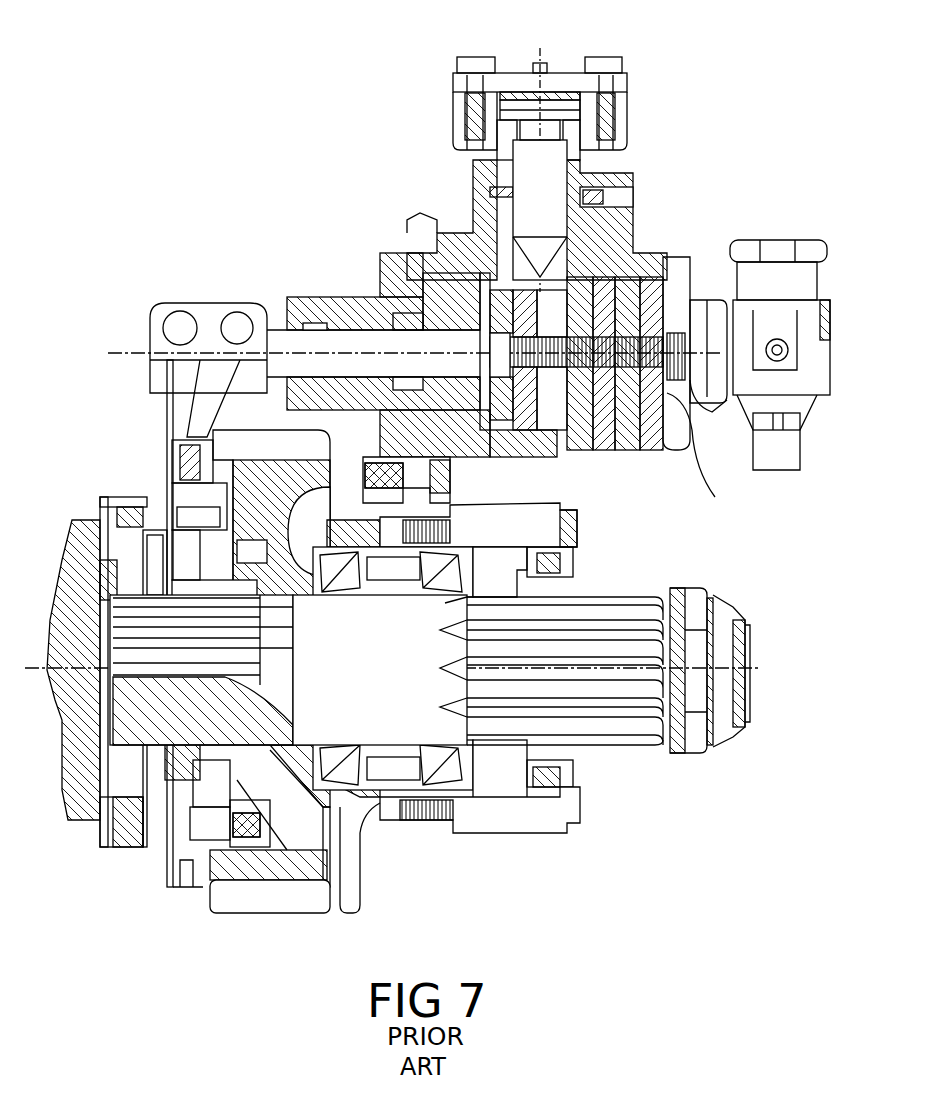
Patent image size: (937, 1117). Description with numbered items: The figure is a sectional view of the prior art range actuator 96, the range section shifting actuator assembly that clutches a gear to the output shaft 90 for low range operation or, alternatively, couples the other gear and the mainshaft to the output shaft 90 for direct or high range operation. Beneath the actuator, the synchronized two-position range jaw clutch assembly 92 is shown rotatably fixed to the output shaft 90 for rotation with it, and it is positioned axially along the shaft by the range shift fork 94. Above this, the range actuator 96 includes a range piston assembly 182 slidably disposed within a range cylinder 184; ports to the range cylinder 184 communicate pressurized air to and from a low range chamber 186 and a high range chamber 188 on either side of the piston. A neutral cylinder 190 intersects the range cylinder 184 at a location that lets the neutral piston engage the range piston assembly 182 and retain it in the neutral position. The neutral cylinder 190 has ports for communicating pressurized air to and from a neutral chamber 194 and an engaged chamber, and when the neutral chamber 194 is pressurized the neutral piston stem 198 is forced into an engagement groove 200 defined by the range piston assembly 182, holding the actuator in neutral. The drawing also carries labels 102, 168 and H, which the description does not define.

The output shaft 90 is at (387, 648).
The range jaw clutch assembly 92 is at (172, 463).
The range shift fork 94 is at (158, 392).
The range actuator 96 is at (377, 266).
The valve body 102 is at (493, 162).
The fitting 168 is at (787, 272).
The range piston assembly 182 is at (678, 300).
The range cylinder 184 is at (588, 448).
The low range chamber 186 is at (377, 290).
The high range chamber 188 is at (716, 497).
The neutral cylinder 190 is at (575, 158).
The neutral chamber 194 is at (552, 88).
The neutral piston stem 198 is at (500, 170).
The engagement groove 200 is at (557, 455).
The housing bracket H is at (360, 900).